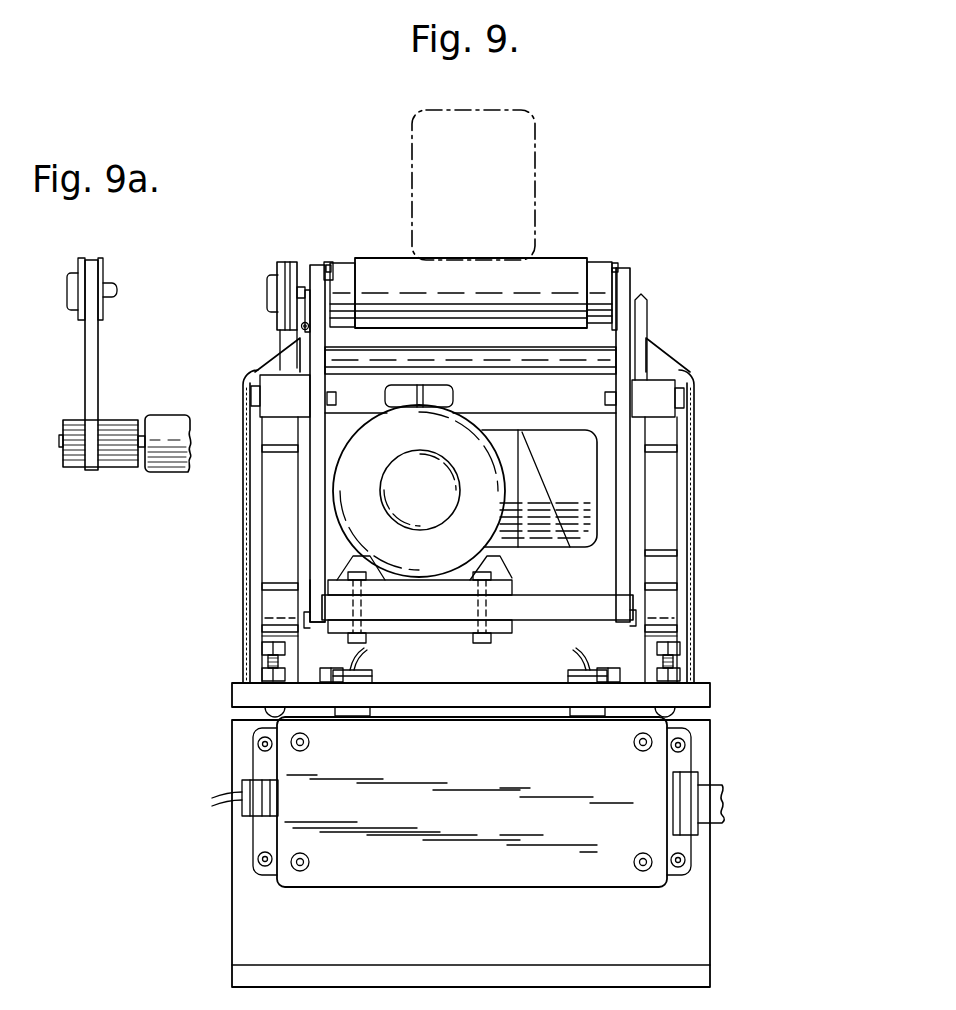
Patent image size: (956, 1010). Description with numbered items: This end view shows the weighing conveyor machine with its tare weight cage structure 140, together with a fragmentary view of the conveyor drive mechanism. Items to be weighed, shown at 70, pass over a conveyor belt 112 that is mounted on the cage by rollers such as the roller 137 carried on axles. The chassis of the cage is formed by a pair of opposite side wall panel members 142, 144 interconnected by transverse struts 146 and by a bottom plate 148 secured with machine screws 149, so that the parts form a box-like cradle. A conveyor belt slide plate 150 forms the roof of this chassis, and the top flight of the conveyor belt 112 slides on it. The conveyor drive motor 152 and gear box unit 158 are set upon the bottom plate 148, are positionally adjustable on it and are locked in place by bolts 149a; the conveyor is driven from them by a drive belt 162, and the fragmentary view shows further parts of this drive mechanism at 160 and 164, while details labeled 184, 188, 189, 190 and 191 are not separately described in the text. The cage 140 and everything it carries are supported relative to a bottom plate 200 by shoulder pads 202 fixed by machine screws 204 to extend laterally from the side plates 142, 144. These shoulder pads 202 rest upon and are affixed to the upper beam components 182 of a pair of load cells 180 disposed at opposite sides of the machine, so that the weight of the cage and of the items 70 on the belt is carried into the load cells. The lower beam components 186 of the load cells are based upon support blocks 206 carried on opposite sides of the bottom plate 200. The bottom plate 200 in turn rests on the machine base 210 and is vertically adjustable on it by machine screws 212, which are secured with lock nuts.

In FIG. 9, the items to be weighed 70 is at (412, 128).
In FIG. 9, the conveyor belt 112 is at (556, 258).
In FIG. 9, the roller 137 is at (598, 262).
In FIG. 9, the tare weight cage structure 140 is at (428, 640).
In FIG. 9, the side wall panel member 142 is at (318, 593).
In FIG. 9, the side wall panel member 144 is at (625, 540).
In FIG. 9, the transverse strut 146 is at (588, 347).
In FIG. 9, the bottom plate 148 is at (540, 605).
In FIG. 9, the machine screws 149 is at (307, 617).
In FIG. 9, the bolts 149a is at (378, 562).
In FIG. 9, the conveyor belt slide plate 150 is at (329, 264).
In FIG. 9, the conveyor drive motor 152 is at (470, 420).
In FIG. 9, the gear box unit 158 is at (455, 395).
In FIG. 9A, the gear box unit 158 is at (165, 412).
In FIG. 9A, the driven gear 160 is at (114, 466).
In FIG. 9, the drive belt 162 is at (287, 337).
In FIG. 9A, the drive belt 162 is at (85, 364).
In FIG. 9, the pulley 164 is at (286, 264).
In FIG. 9A, the pulley 164 is at (91, 257).
In FIG. 9, the load cell 180 is at (242, 506).
In FIG. 9, the upper beam component 182 is at (268, 423).
In FIG. 9, the middle housing panel 184 is at (268, 528).
In FIG. 9, the lower beam component 186 is at (268, 568).
In FIG. 9, the right bearing plate 188 is at (632, 274).
In FIG. 9, the left bearing plate 189 is at (318, 265).
In FIG. 9, the screw 190 is at (300, 326).
In FIG. 9, the gusset 191 is at (650, 315).
In FIG. 9, the bottom plate 200 is at (700, 697).
In FIG. 9, the shoulder pad 202 is at (660, 370).
In FIG. 9, the machine screws 204 is at (258, 397).
In FIG. 9, the support block 206 is at (258, 610).
In FIG. 9, the machine base 210 is at (478, 939).
In FIG. 9, the machine screws 212 is at (262, 648).